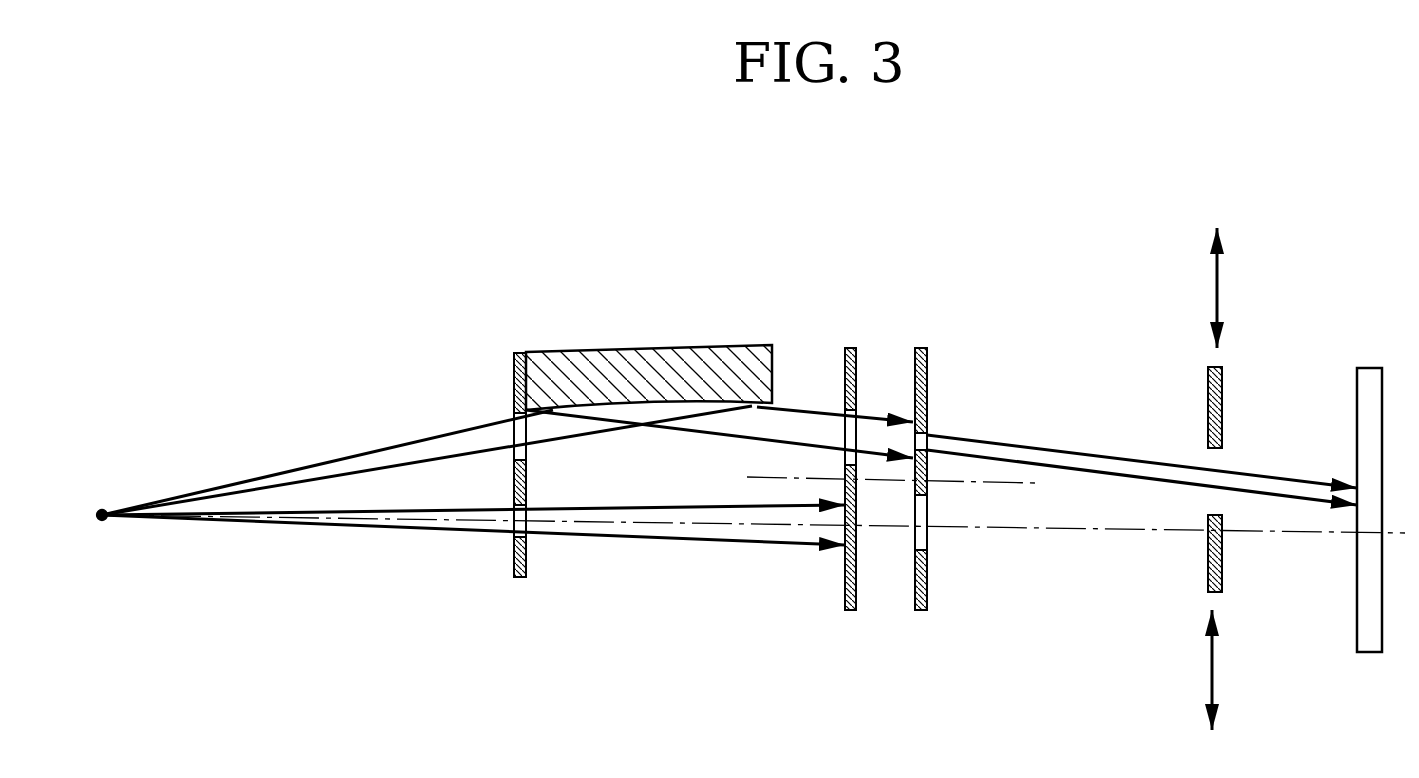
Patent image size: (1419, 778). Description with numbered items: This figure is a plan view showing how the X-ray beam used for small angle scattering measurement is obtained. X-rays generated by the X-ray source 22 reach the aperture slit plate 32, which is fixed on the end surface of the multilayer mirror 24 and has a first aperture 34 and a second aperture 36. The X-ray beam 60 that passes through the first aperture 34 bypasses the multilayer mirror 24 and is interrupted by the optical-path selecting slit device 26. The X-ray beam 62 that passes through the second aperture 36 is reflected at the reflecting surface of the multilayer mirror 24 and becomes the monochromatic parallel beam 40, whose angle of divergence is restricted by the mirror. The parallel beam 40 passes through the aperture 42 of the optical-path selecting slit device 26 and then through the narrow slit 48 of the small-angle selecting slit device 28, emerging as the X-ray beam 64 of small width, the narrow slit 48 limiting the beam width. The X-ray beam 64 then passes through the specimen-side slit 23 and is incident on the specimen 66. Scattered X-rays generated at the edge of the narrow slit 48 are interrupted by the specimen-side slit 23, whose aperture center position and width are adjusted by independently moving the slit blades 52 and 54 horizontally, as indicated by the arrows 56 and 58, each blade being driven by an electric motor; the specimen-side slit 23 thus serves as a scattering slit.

The X-ray source 22 is at (103, 506).
The specimen-side slit 23 is at (1208, 479).
The multilayer mirror 24 is at (626, 345).
The optical-path selecting slit device 26 is at (850, 346).
The small-angle selecting slit device 28 is at (918, 346).
The aperture slit plate 32 is at (480, 523).
The first aperture 34 is at (503, 528).
The second aperture 36 is at (517, 435).
The parallel beam 40 is at (803, 403).
The aperture of the optical-path selecting slit device 42 is at (843, 432).
The narrow slit 48 is at (928, 444).
The slit blade 52 is at (1208, 565).
The slit blade 54 is at (1208, 408).
The arrow 56 is at (1212, 670).
The arrow 58 is at (1217, 288).
The X-ray beam 60 is at (655, 539).
The X-ray beam 62 is at (555, 442).
The X-ray beam 64 is at (1288, 476).
The specimen 66 is at (1375, 367).